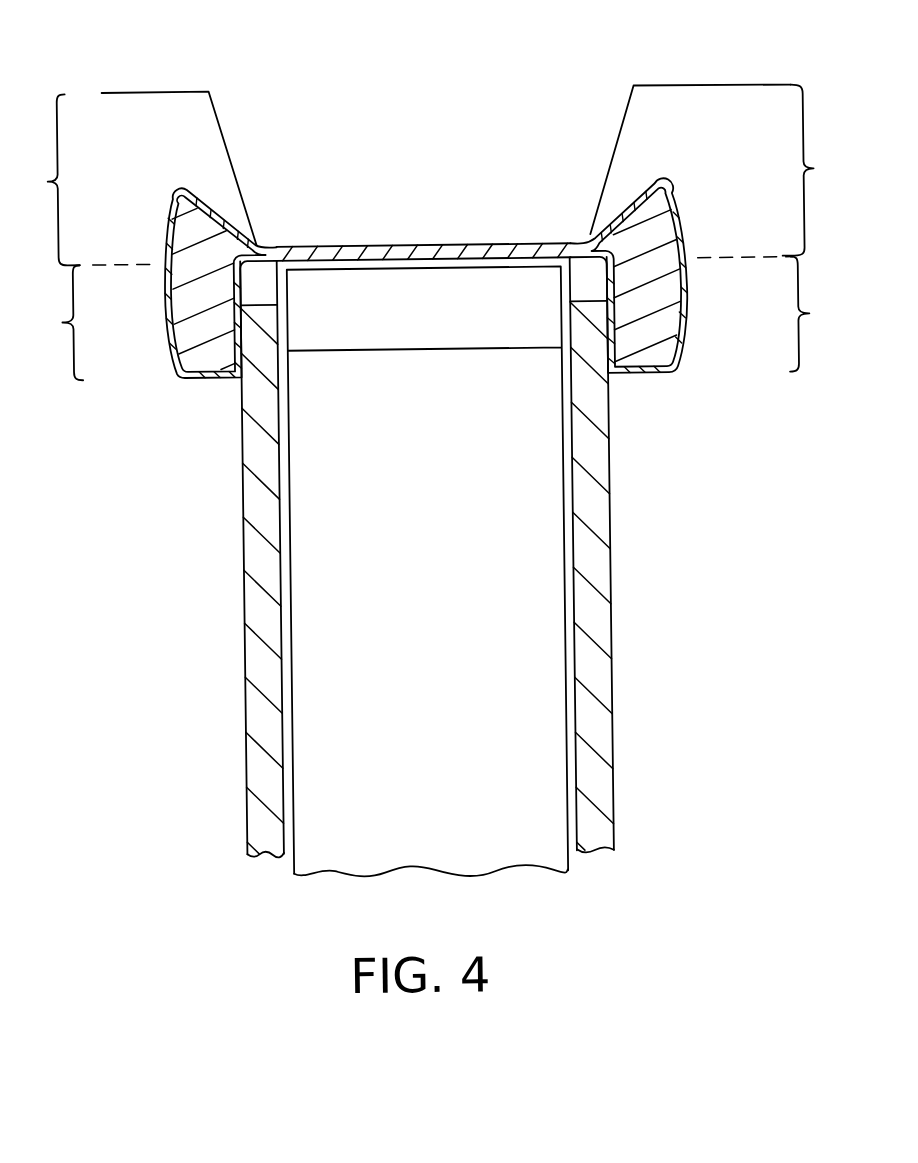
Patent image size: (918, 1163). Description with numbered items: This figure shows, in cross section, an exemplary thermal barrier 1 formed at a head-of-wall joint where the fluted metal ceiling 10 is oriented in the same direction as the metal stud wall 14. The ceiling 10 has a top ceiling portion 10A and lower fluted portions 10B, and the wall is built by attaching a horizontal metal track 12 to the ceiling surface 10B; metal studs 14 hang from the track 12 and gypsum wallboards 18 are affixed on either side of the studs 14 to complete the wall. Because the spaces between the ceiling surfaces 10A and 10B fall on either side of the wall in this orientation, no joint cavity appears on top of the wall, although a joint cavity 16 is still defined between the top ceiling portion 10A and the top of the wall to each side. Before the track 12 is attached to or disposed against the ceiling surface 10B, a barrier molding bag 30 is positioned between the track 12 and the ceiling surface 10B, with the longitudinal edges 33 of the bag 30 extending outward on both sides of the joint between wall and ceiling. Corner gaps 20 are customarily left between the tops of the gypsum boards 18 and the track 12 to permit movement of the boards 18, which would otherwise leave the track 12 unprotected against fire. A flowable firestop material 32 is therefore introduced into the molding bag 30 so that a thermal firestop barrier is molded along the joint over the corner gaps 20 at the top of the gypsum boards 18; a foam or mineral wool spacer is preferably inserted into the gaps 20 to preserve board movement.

The thermal barrier 1 is at (160, 214).
The fluted metal ceiling 10 is at (607, 132).
The top ceiling portion 10A is at (174, 88).
The fluted portion 10B is at (370, 244).
The horizontal metal track 12 is at (569, 315).
The metal studs 14 is at (427, 855).
The joint cavity 16 is at (429, 175).
The gypsum wallboards 18 is at (243, 735).
The corner gaps 20 is at (264, 286).
The barrier molding bag 30 is at (186, 186).
The flowable firestop material 32 is at (196, 310).
The longitudinal edges of the bag 33 is at (430, 318).